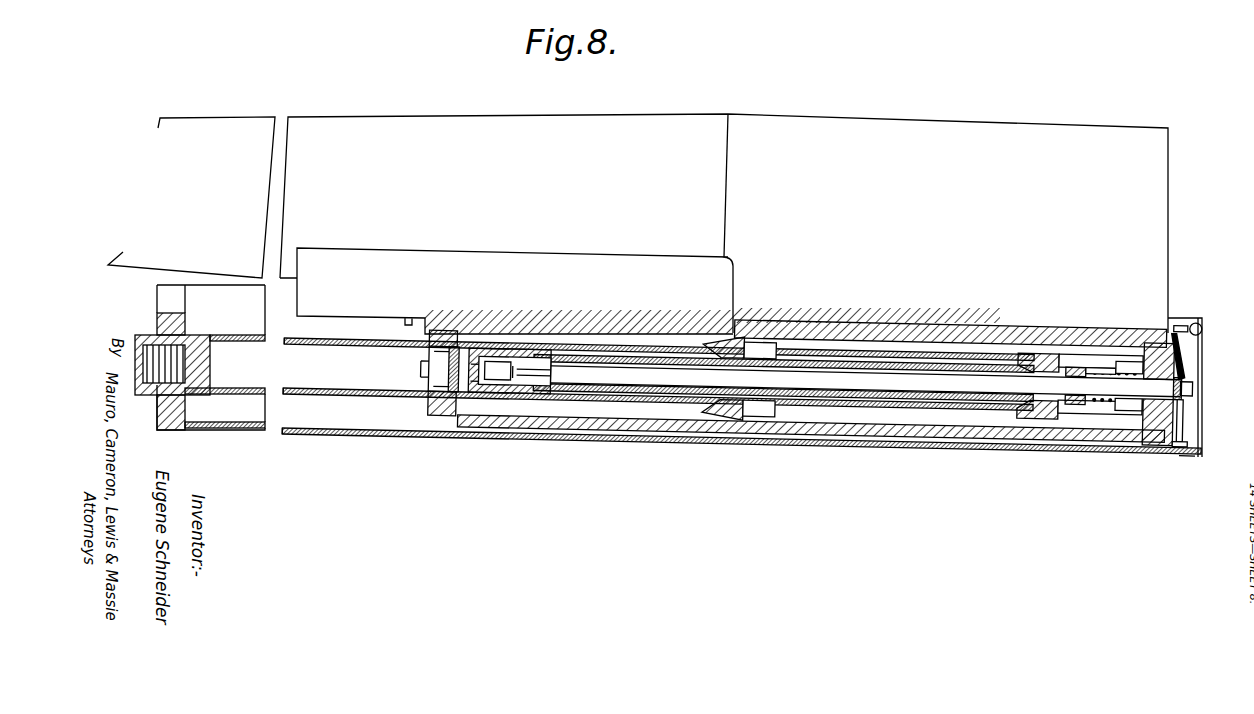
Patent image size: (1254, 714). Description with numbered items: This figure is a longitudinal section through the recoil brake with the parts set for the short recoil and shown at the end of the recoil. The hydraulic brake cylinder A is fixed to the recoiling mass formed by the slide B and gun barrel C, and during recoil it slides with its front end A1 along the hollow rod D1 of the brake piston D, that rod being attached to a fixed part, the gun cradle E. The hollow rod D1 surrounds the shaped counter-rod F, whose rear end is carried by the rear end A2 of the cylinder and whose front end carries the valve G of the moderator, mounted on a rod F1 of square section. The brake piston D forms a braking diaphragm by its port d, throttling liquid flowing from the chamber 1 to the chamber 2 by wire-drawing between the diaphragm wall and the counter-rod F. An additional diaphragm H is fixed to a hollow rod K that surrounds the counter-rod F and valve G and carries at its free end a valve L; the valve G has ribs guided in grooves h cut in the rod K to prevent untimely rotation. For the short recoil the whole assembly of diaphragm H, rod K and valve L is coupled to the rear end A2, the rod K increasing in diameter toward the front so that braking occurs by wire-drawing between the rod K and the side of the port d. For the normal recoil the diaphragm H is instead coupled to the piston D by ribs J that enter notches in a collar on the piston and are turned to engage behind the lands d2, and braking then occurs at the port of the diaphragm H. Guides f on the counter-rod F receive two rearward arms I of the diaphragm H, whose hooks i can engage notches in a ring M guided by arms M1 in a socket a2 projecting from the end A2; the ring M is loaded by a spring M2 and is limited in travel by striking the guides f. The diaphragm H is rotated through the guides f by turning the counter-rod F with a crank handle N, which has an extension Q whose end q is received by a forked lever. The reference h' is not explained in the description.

The gun barrel C is at (1078, 140).
The slide B is at (596, 270).
The gun cradle E is at (155, 415).
The hydraulic brake cylinder A is at (908, 322).
The front end of the cylinder A1 is at (420, 398).
The rear end of the cylinder A2 is at (1184, 412).
The socket a2 is at (1190, 422).
The chamber 1 is at (585, 334).
The chamber 2 is at (940, 340).
The counter-rod F is at (640, 378).
The rod of square section F1 is at (532, 345).
The brake piston D is at (700, 390).
The hollow rod D1 is at (628, 348).
The hollow rod K is at (668, 352).
The opening h' is at (702, 329).
The port h is at (836, 444).
The port d is at (735, 340).
The lands d2 is at (770, 338).
The valve G is at (515, 392).
The valve L is at (445, 404).
The additional diaphragm H is at (1033, 338).
The ribs J is at (1066, 348).
The arms I is at (1082, 352).
The noses or hooks i is at (1100, 350).
The guides f is at (1085, 408).
The ring M is at (1128, 410).
The arms M1 is at (1132, 330).
The spring M2 is at (1182, 352).
The crank handle N is at (1192, 370).
The extension Q is at (1178, 436).
The end of the extension q is at (1188, 440).